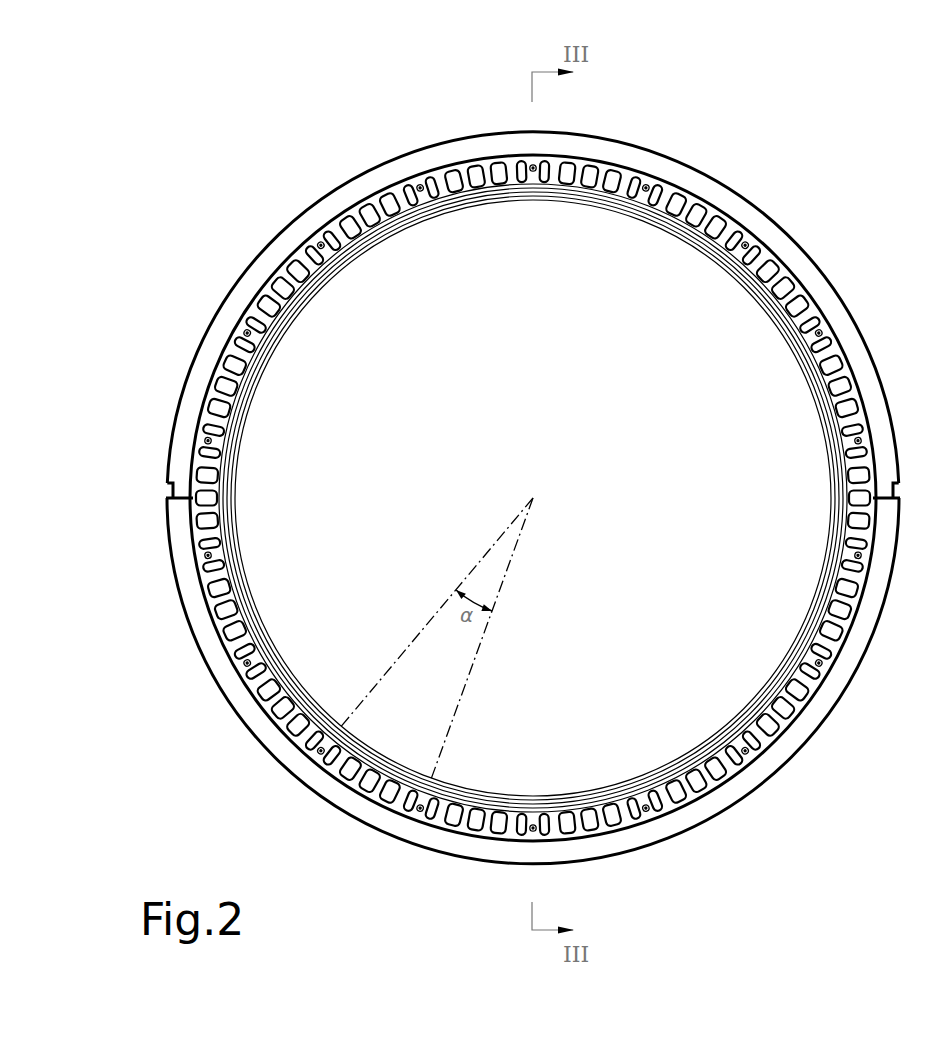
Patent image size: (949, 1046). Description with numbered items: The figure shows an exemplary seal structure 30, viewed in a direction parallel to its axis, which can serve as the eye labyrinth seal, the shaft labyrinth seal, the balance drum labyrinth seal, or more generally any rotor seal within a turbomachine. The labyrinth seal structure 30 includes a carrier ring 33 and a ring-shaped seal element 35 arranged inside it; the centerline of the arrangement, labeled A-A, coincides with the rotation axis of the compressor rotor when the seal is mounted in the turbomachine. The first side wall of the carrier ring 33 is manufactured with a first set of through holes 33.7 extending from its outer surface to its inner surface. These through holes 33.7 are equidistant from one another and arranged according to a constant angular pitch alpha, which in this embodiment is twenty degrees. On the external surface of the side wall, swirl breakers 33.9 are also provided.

The seal structure 30 is at (810, 150).
The carrier ring 33 is at (830, 292).
The through holes 33.7 is at (738, 250).
The swirl breakers 33.9 is at (452, 185).
The ring-shaped seal element 35 is at (768, 307).